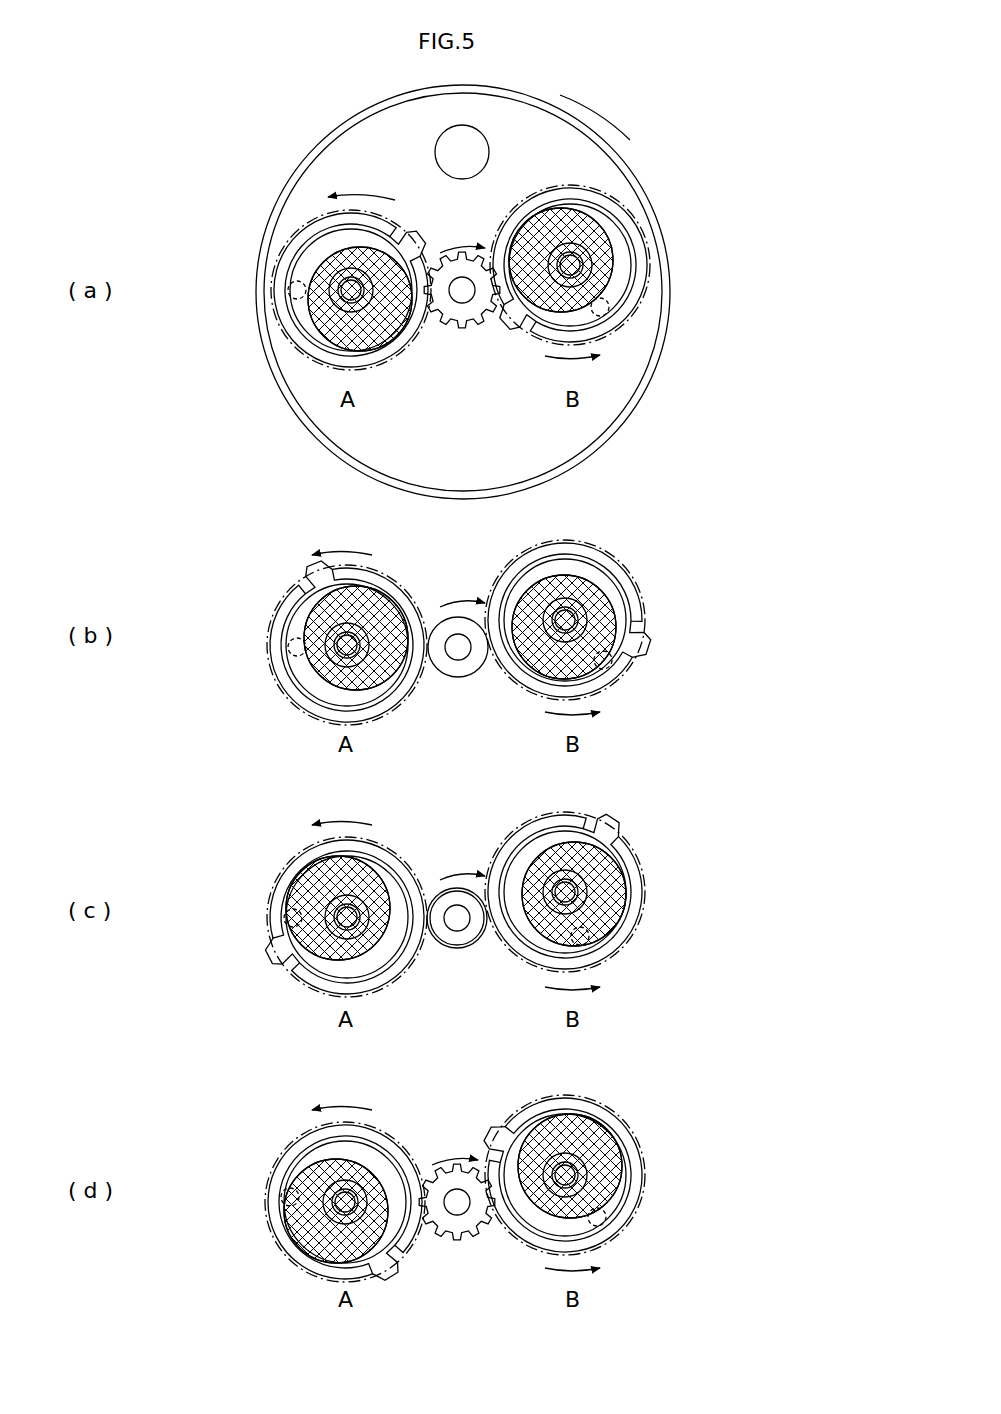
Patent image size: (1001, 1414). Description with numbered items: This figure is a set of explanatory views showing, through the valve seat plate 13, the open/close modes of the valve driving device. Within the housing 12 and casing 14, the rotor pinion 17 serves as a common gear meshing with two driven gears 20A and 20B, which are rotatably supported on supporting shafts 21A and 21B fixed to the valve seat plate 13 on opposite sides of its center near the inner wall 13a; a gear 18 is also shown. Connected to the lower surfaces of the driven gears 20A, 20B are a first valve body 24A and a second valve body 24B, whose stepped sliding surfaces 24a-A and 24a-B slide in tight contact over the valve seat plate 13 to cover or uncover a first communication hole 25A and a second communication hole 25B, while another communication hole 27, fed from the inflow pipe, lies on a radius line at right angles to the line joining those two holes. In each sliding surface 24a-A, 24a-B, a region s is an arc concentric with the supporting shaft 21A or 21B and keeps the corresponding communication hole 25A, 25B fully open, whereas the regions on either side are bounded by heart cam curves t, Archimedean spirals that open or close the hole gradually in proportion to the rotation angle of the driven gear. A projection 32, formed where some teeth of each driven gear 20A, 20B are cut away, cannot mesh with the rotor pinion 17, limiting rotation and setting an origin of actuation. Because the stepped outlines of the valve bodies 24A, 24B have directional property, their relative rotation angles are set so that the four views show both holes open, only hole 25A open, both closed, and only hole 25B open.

The housing 12 is at (300, 433).
The valve seat plate 13 is at (478, 459).
The inner wall 13a is at (617, 423).
The casing 14 is at (597, 123).
The rotor pinion 17 is at (481, 310).
The gear 18 is at (460, 305).
The driven gear 20A is at (330, 352).
The driven gear 20B is at (622, 323).
The supporting shaft 21A is at (365, 250).
The supporting shaft 21B is at (602, 272).
The first valve body 24A is at (305, 267).
The second valve body 24B is at (610, 235).
The sliding surface 24a-A is at (337, 368).
The sliding surface 24a-B is at (603, 247).
The first communication hole 25A is at (288, 291).
The second communication hole 25B is at (607, 307).
The communication hole 27 is at (437, 150).
The projection 32 is at (437, 258).
The region s is at (350, 250).
The heart cam curves t is at (340, 222).